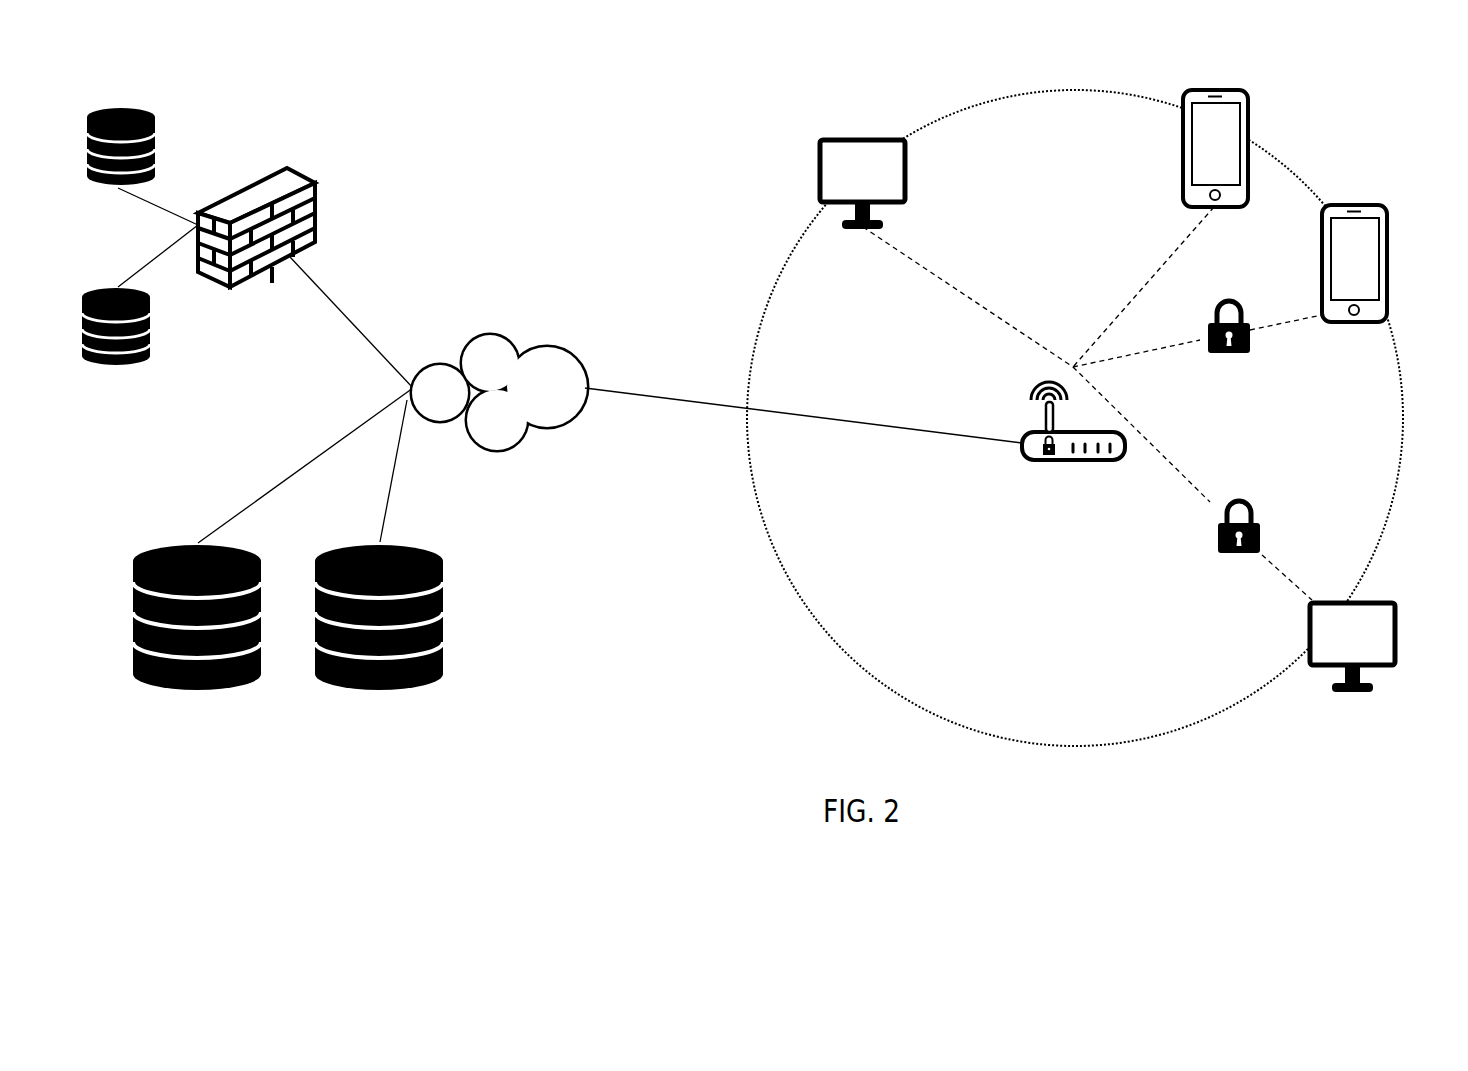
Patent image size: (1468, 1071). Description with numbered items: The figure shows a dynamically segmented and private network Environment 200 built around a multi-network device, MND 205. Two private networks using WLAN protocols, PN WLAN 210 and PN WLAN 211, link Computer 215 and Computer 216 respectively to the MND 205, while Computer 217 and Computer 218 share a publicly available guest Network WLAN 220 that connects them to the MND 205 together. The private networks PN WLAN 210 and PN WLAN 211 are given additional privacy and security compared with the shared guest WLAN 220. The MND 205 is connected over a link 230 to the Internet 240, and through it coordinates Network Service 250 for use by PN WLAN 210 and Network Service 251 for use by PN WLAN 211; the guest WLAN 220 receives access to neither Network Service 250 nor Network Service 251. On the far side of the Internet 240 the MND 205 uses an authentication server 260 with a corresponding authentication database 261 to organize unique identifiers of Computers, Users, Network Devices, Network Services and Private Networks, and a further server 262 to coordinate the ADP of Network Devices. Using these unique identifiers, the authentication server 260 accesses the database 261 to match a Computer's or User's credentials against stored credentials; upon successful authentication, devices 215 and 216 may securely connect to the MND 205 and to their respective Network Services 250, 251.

The network environment 200 is at (1075, 399).
The MND 205 is at (1073, 442).
The PN WLAN 210 is at (1265, 534).
The PN WLAN 211 is at (1258, 349).
The Computer 215 is at (1382, 647).
The Computer 216 is at (1383, 263).
The Computer 217 is at (1245, 148).
The Computer 218 is at (851, 167).
The shared guest WLAN 220 is at (1038, 354).
The network connection 230 is at (803, 434).
The Internet 240 is at (499, 417).
The Network Service 250 is at (197, 643).
The Network Service 251 is at (379, 643).
The authentication server 260 is at (256, 211).
The authentication database 261 is at (121, 125).
The server 262 is at (116, 346).